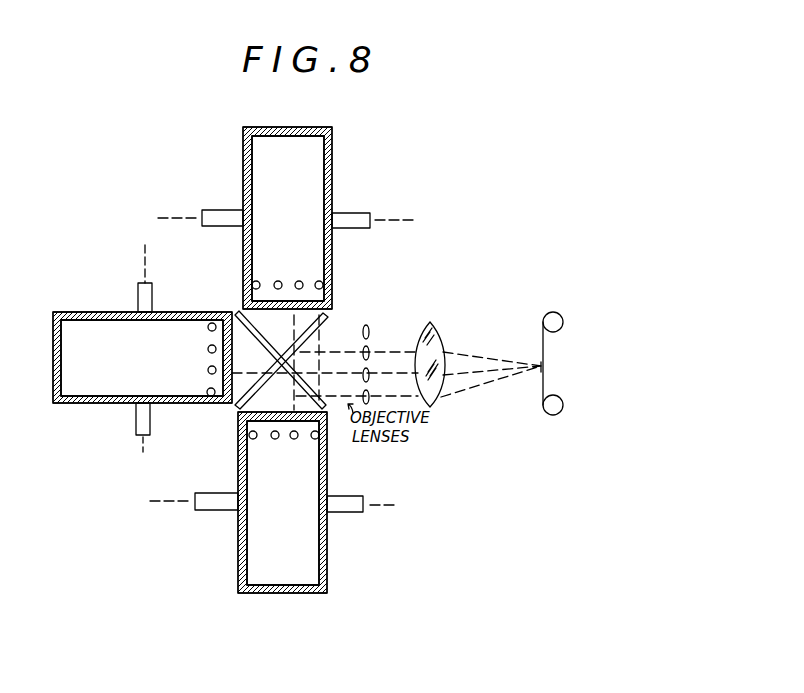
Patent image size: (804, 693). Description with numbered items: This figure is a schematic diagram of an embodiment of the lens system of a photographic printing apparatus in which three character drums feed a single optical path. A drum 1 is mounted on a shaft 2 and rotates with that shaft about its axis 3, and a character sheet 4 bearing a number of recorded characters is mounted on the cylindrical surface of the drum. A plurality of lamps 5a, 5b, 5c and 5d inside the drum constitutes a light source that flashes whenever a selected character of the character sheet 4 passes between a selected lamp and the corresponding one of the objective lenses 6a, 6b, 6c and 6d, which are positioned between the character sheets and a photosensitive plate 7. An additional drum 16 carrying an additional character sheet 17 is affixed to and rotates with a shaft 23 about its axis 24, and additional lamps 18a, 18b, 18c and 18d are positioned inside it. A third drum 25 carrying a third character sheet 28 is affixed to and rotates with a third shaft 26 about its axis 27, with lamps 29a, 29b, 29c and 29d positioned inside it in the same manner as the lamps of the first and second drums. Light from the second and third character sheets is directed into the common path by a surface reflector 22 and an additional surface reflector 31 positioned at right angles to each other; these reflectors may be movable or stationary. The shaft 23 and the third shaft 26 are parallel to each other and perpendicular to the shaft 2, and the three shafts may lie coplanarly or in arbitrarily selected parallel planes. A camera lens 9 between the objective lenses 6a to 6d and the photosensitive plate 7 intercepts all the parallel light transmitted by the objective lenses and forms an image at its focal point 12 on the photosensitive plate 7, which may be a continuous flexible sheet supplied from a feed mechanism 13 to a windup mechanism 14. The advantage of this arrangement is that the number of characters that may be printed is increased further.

The drum 1 is at (92, 392).
The shaft 2 is at (140, 298).
The axis 3 is at (145, 263).
The character sheet 4 is at (233, 310).
The lamp 5a is at (208, 329).
The lamp 5b is at (208, 351).
The lamp 5c is at (208, 372).
The lamp 5d is at (207, 392).
The objective lens 6a is at (369, 331).
The objective lens 6b is at (363, 352).
The objective lens 6c is at (369, 374).
The objective lens 6d is at (363, 397).
The photosensitive plate 7 is at (543, 338).
The camera lens 9 is at (440, 400).
The focal point 12 is at (540, 371).
The feed mechanism 13 is at (563, 405).
The windup mechanism 14 is at (563, 322).
The additional drum 16 is at (318, 158).
The additional character sheet 17 is at (333, 305).
The additional lamp 18a is at (323, 283).
The additional lamp 18b is at (300, 281).
The additional lamp 18c is at (279, 281).
The additional lamp 18d is at (257, 281).
The surface reflector 22 is at (326, 409).
The shaft 23 is at (358, 205).
The axis 24 is at (400, 218).
The third drum 25 is at (305, 563).
The third shaft 26 is at (215, 512).
The axis 27 is at (171, 502).
The third character sheet 28 is at (318, 595).
The lamp 29a is at (255, 439).
The lamp 29b is at (276, 439).
The lamp 29c is at (293, 431).
The lamp 29d is at (314, 439).
The additional surface reflector 31 is at (236, 449).